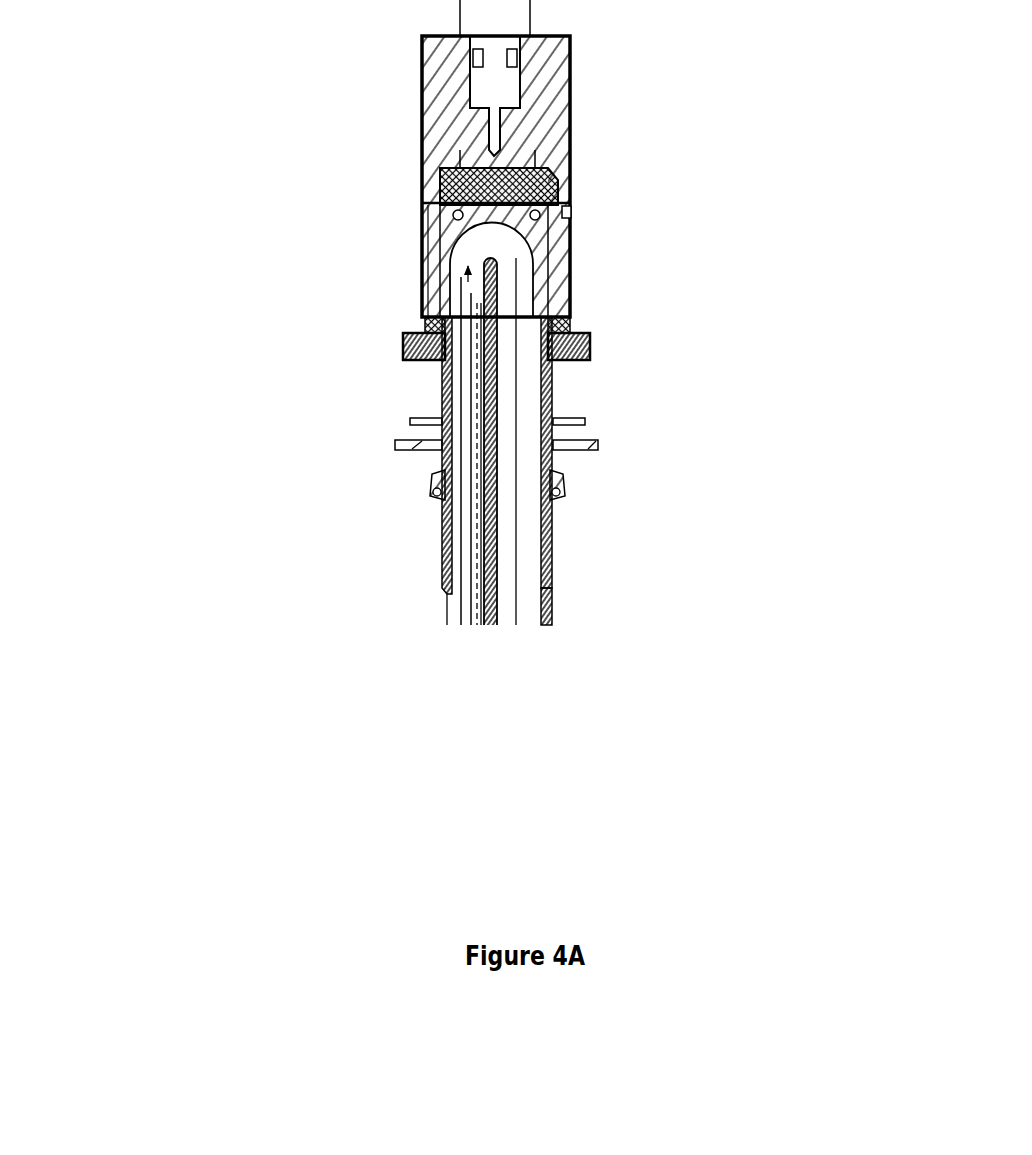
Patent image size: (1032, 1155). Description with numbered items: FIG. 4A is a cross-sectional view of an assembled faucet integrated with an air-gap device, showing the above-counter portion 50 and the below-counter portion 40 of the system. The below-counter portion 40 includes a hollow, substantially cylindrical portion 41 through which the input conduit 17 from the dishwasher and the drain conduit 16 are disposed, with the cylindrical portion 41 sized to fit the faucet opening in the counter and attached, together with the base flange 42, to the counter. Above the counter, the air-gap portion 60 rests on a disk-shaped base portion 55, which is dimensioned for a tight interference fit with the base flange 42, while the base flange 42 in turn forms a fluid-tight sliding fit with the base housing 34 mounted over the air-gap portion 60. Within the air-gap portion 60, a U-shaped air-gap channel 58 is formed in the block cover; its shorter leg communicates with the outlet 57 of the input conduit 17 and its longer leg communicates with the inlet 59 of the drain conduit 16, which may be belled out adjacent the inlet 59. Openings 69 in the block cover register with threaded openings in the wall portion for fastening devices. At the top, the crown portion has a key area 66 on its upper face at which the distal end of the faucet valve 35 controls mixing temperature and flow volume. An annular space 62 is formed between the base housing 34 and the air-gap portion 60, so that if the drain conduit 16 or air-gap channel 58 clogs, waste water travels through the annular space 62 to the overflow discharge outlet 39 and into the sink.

The faucet valve 35 is at (572, 56).
The key area 66 is at (575, 125).
The openings 69 is at (420, 192).
The overflow discharge outlet 39 is at (576, 212).
The annular space 62 is at (425, 238).
The inlet of the outflow drain conduit 59 is at (575, 277).
The air-gap channel 58 is at (425, 253).
The outlet of the dishwasher inflow conduit 57 is at (420, 280).
The base portion 55 is at (577, 313).
The base housing 34 is at (420, 309).
The base flange 42 is at (412, 356).
The air-gap portion 60 is at (210, 360).
The above-counter portion 50 is at (740, 334).
The below-counter portion 40 is at (697, 630).
The cylindrical portion 41 is at (553, 399).
The drain conduit 16 is at (548, 603).
The input conduit 17 is at (467, 610).